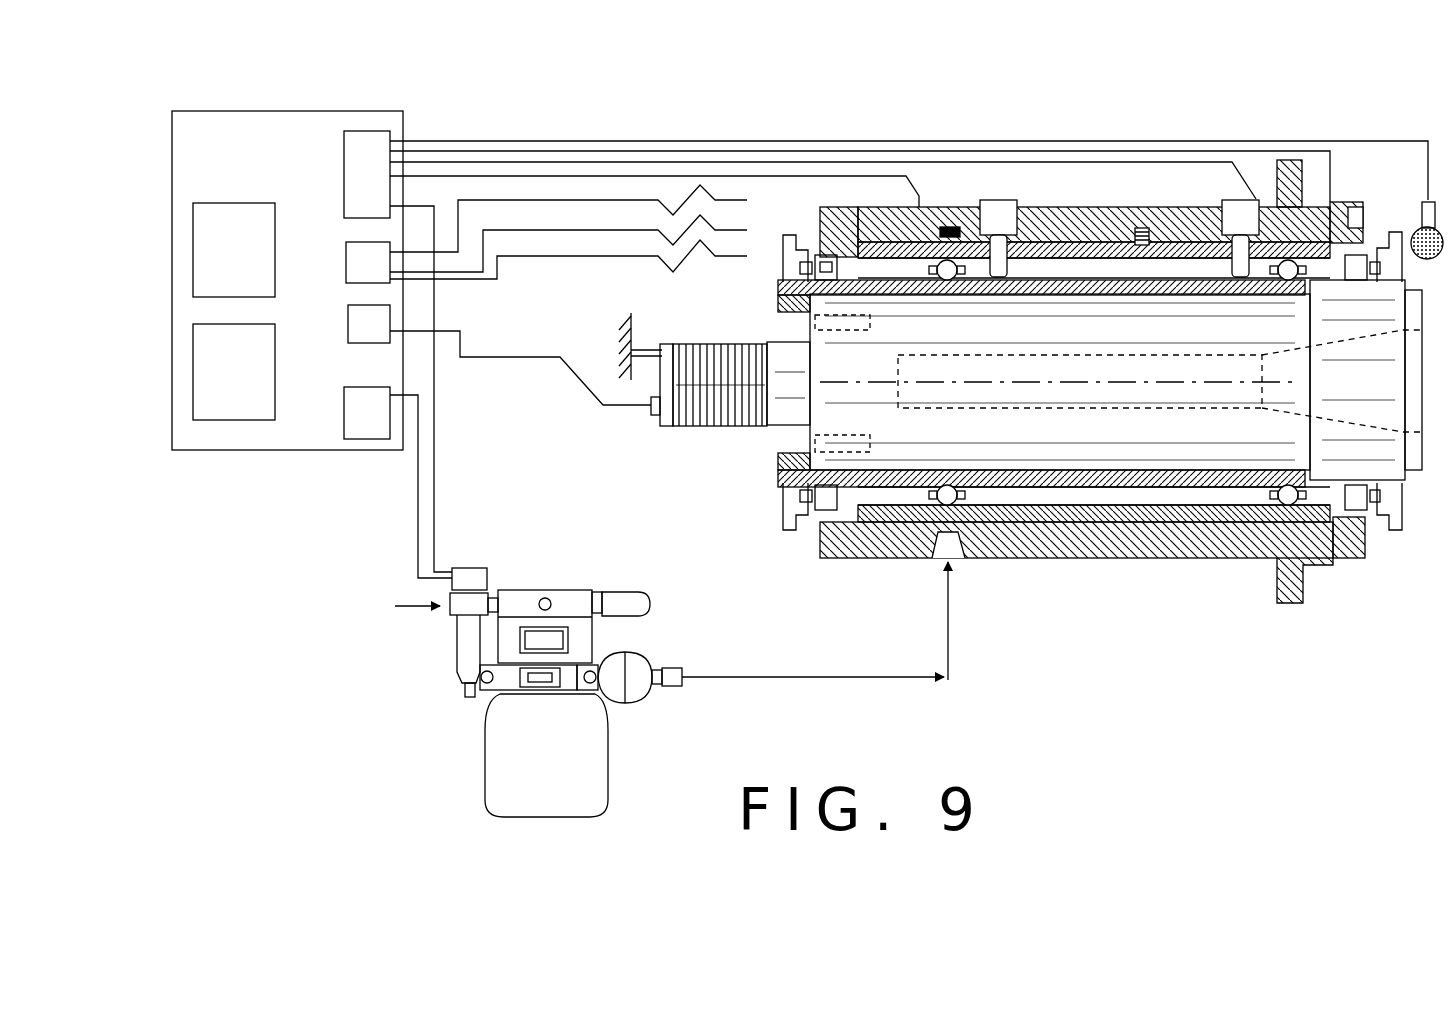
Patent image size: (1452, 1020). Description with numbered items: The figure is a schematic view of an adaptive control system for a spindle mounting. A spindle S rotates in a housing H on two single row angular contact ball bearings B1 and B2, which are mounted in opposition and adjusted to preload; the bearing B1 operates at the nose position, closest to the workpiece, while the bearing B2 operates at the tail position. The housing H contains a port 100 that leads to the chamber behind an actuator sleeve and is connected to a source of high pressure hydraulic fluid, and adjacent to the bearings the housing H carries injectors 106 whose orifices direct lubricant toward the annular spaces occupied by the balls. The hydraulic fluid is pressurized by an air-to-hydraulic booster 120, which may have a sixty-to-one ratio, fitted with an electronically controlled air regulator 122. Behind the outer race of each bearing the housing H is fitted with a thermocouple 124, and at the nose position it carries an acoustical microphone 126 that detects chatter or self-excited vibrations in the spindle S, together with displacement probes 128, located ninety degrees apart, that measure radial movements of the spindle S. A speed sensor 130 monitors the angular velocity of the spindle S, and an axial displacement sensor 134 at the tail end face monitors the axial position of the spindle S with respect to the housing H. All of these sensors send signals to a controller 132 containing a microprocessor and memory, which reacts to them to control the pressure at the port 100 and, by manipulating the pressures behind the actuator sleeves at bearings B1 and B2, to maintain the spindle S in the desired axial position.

The port 100 is at (955, 566).
The injectors 106 is at (1020, 200).
The air-to-hydraulic booster 120 is at (498, 778).
The electronically controlled air regulator 122 is at (478, 576).
The thermocouple 124 is at (952, 207).
The acoustical microphone 126 is at (1413, 232).
The displacement probes 128 is at (1345, 215).
The speed sensor 130 is at (651, 405).
The controller 132 is at (245, 440).
The axial displacement sensor 134 is at (658, 350).
The bearing B1 is at (1282, 470).
The bearing B2 is at (950, 470).
The housing H is at (1153, 562).
The spindle S is at (1392, 412).